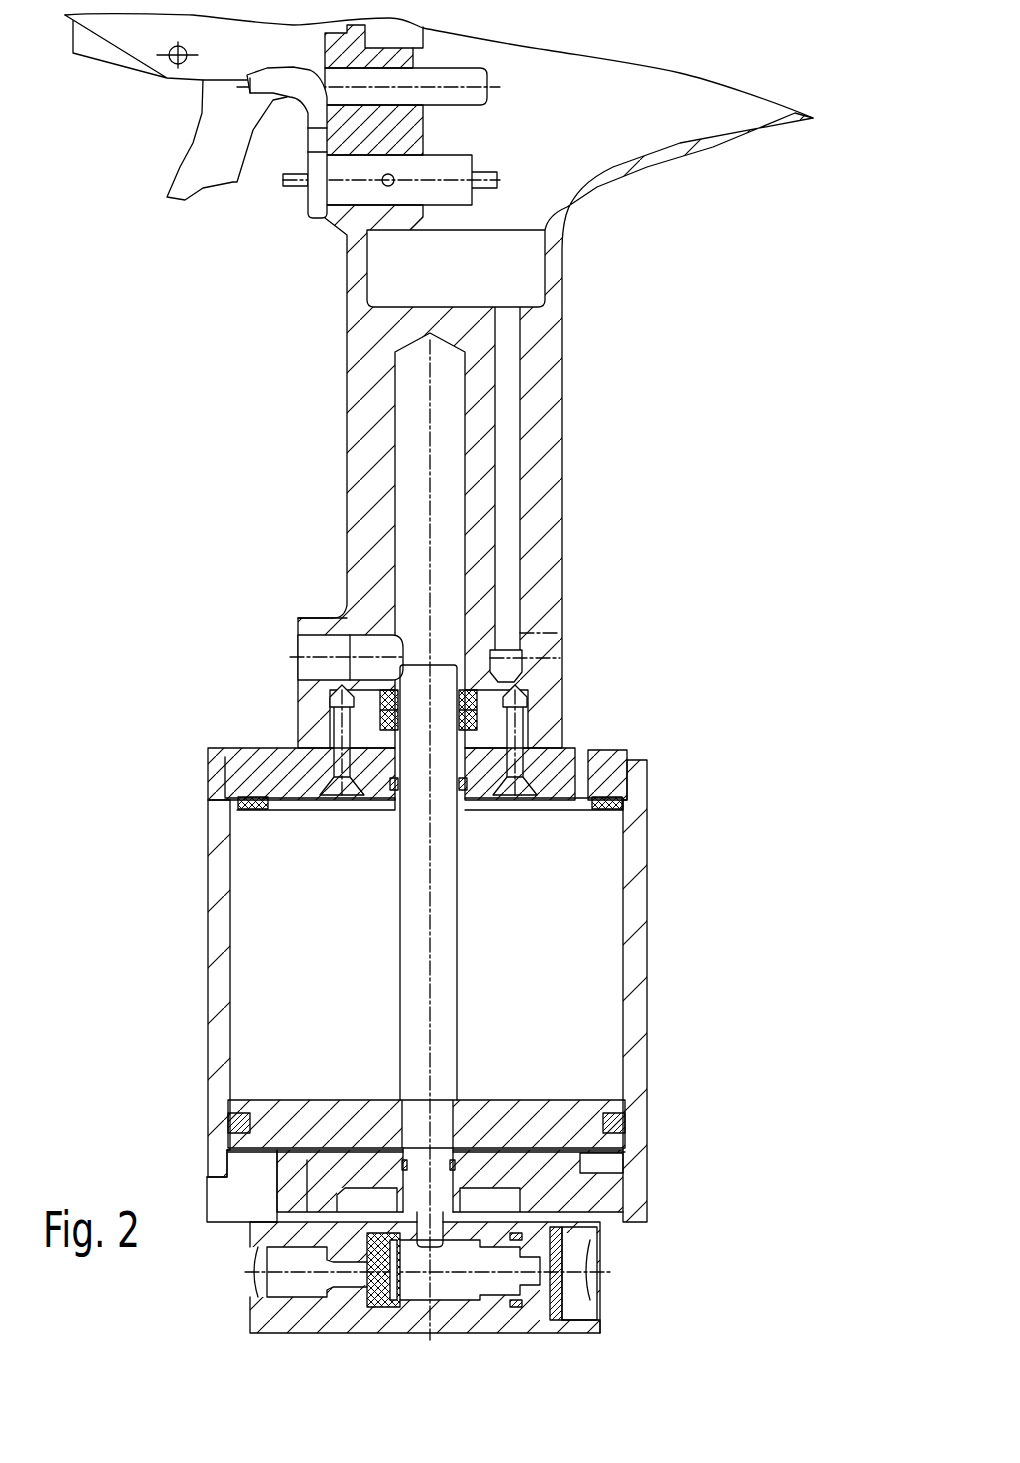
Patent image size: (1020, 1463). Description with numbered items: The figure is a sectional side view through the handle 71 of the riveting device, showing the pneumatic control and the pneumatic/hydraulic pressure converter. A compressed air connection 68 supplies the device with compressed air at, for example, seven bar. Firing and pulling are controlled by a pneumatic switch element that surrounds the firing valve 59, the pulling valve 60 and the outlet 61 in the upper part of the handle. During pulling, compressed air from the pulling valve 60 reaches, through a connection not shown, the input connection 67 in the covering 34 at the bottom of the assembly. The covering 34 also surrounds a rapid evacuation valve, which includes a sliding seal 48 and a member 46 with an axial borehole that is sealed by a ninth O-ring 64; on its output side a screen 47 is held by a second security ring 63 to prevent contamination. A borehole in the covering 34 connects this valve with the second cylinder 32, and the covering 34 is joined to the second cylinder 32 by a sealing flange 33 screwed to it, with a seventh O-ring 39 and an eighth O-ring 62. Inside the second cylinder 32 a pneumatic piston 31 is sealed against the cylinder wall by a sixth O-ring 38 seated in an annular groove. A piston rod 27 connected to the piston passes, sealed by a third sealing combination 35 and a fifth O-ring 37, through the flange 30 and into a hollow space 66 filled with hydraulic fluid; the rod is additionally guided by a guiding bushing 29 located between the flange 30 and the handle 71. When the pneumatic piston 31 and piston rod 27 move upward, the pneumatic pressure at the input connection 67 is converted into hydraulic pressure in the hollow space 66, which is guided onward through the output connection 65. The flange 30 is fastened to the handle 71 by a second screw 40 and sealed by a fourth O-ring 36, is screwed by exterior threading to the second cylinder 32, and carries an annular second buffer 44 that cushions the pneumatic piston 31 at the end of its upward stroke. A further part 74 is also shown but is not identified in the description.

The piston rod 27 is at (450, 943).
The guiding bushing 29 is at (547, 650).
The flange 30 is at (600, 772).
The pneumatic piston 31 is at (580, 1110).
The second cylinder 32 is at (636, 975).
The sealing flange 33 is at (598, 1165).
The covering 34 is at (260, 1315).
The third sealing combination 35 is at (386, 712).
The fourth O-ring 36 is at (340, 720).
The fifth O-ring 37 is at (393, 782).
The sixth O-ring 38 is at (622, 1120).
The seventh O-ring 39 is at (235, 1155).
The second screw 40 is at (520, 728).
The second buffer 44 is at (625, 808).
The member 46 is at (465, 1247).
The screen 47 is at (567, 1323).
The sliding seal 48 is at (380, 1317).
The firing valve 59 is at (337, 107).
The pulling valve 60 is at (343, 187).
The outlet 61 is at (203, 163).
The eighth O-ring 62 is at (300, 1103).
The second security ring 63 is at (567, 1310).
The ninth O-ring 64 is at (520, 1228).
The output connection 65 is at (312, 648).
The hollow space 66 is at (426, 528).
The input connection 67 is at (273, 1272).
The compressed air connection 68 is at (525, 665).
The handle 71 is at (600, 485).
The flange block 74 is at (583, 757).